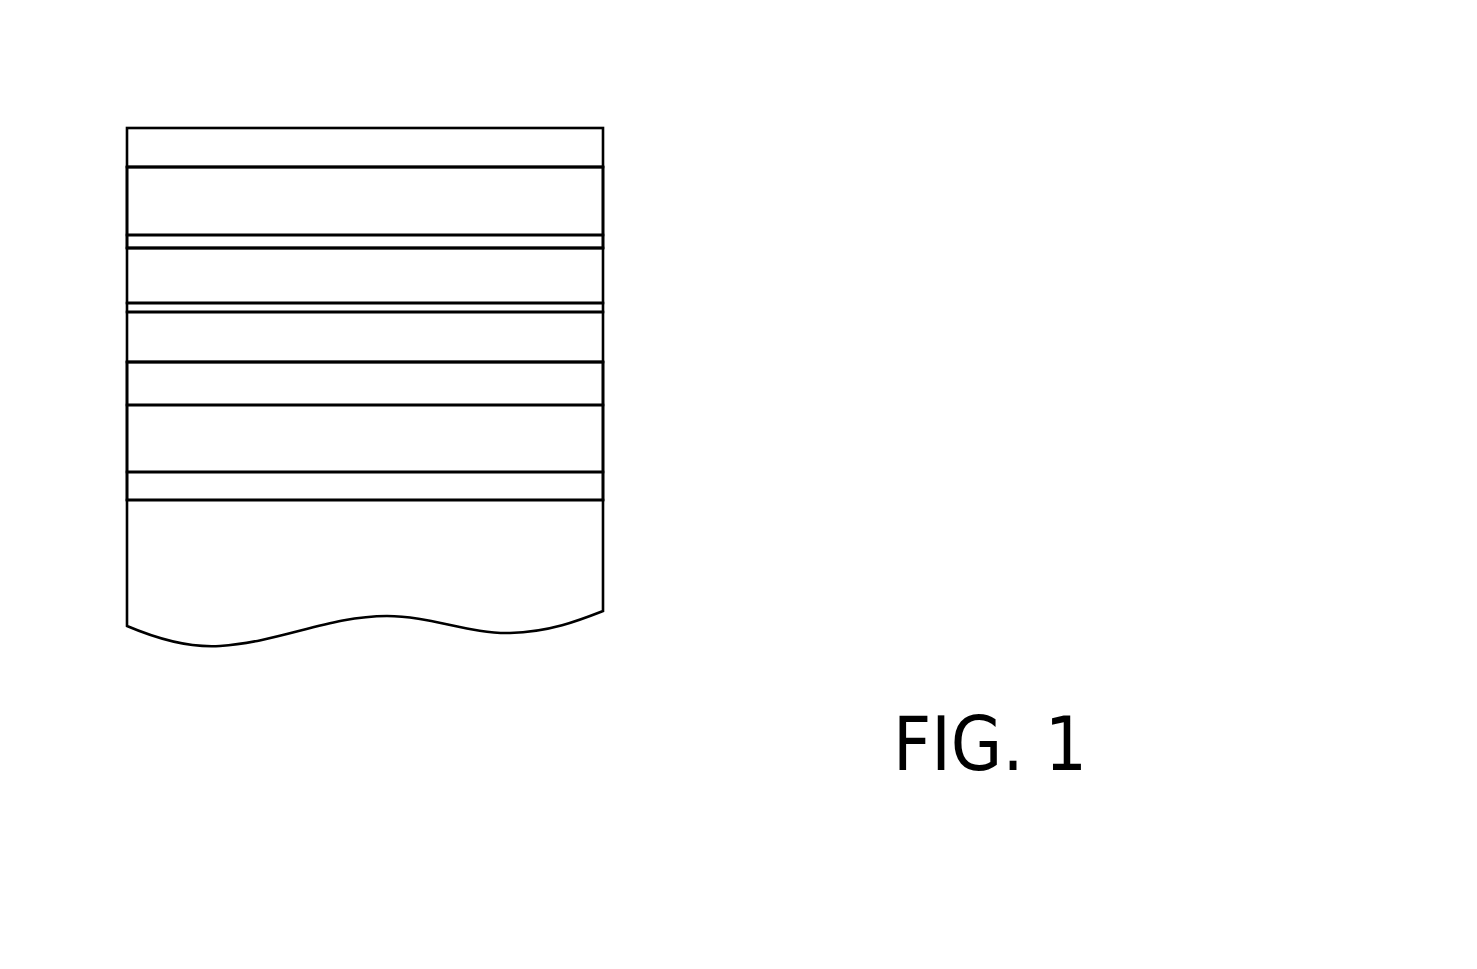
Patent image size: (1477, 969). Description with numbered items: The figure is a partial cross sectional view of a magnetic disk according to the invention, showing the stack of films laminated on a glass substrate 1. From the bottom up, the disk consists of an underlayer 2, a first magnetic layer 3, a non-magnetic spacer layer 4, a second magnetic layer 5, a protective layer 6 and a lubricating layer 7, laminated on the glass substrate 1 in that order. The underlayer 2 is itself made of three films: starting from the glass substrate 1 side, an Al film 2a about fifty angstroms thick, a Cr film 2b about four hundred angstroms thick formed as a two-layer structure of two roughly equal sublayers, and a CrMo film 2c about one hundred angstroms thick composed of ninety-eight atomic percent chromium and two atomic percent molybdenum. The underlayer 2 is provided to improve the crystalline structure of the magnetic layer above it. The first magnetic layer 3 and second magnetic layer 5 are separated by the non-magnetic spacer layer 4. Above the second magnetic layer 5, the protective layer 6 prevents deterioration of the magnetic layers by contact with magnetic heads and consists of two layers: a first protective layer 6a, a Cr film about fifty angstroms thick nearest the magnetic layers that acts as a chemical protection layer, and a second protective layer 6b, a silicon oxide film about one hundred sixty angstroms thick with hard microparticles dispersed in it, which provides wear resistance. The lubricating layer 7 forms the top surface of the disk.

The glass substrate 1 is at (580, 560).
The underlayer 2 is at (1140, 382).
The Al film 2a is at (580, 486).
The Cr film 2b is at (580, 433).
The CrMo film 2c is at (580, 375).
The first magnetic layer 3 is at (580, 332).
The non-magnetic spacer layer 4 is at (580, 306).
The second magnetic layer 5 is at (580, 275).
The protective layer 6 is at (1138, 176).
The first protective layer 6a is at (580, 240).
The second protective layer 6b is at (580, 186).
The lubricating layer 7 is at (385, 152).